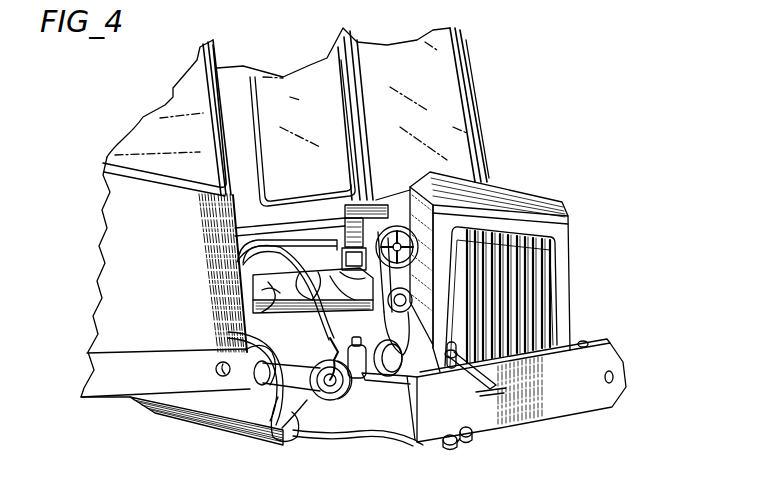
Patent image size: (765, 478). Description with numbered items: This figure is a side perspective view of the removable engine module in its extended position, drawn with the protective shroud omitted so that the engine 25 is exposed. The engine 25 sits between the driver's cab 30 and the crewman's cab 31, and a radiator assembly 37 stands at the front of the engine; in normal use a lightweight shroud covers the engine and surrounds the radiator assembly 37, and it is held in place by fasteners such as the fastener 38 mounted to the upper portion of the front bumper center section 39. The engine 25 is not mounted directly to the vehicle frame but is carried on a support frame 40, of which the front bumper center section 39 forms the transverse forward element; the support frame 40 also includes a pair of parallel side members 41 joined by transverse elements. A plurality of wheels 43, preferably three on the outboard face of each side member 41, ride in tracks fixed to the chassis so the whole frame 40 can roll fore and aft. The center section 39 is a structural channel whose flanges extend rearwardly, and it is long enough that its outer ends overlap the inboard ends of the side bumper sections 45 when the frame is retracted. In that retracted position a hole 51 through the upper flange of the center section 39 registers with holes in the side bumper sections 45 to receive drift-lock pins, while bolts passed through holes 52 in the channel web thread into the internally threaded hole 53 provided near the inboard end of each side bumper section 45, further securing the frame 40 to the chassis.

The engine 25 is at (313, 262).
The driver's cab 30 is at (437, 100).
The crewman's cab 31 is at (165, 131).
The radiator assembly 37 is at (563, 213).
The fastener 38 is at (507, 421).
The front bumper center section 39 is at (583, 402).
The support frame 40 is at (297, 373).
The side members 41 is at (255, 340).
The wheels 43 is at (340, 405).
The side bumper section 45 is at (110, 393).
The hole 51 is at (585, 343).
The holes 52 is at (613, 377).
The internally threaded hole 53 is at (217, 378).